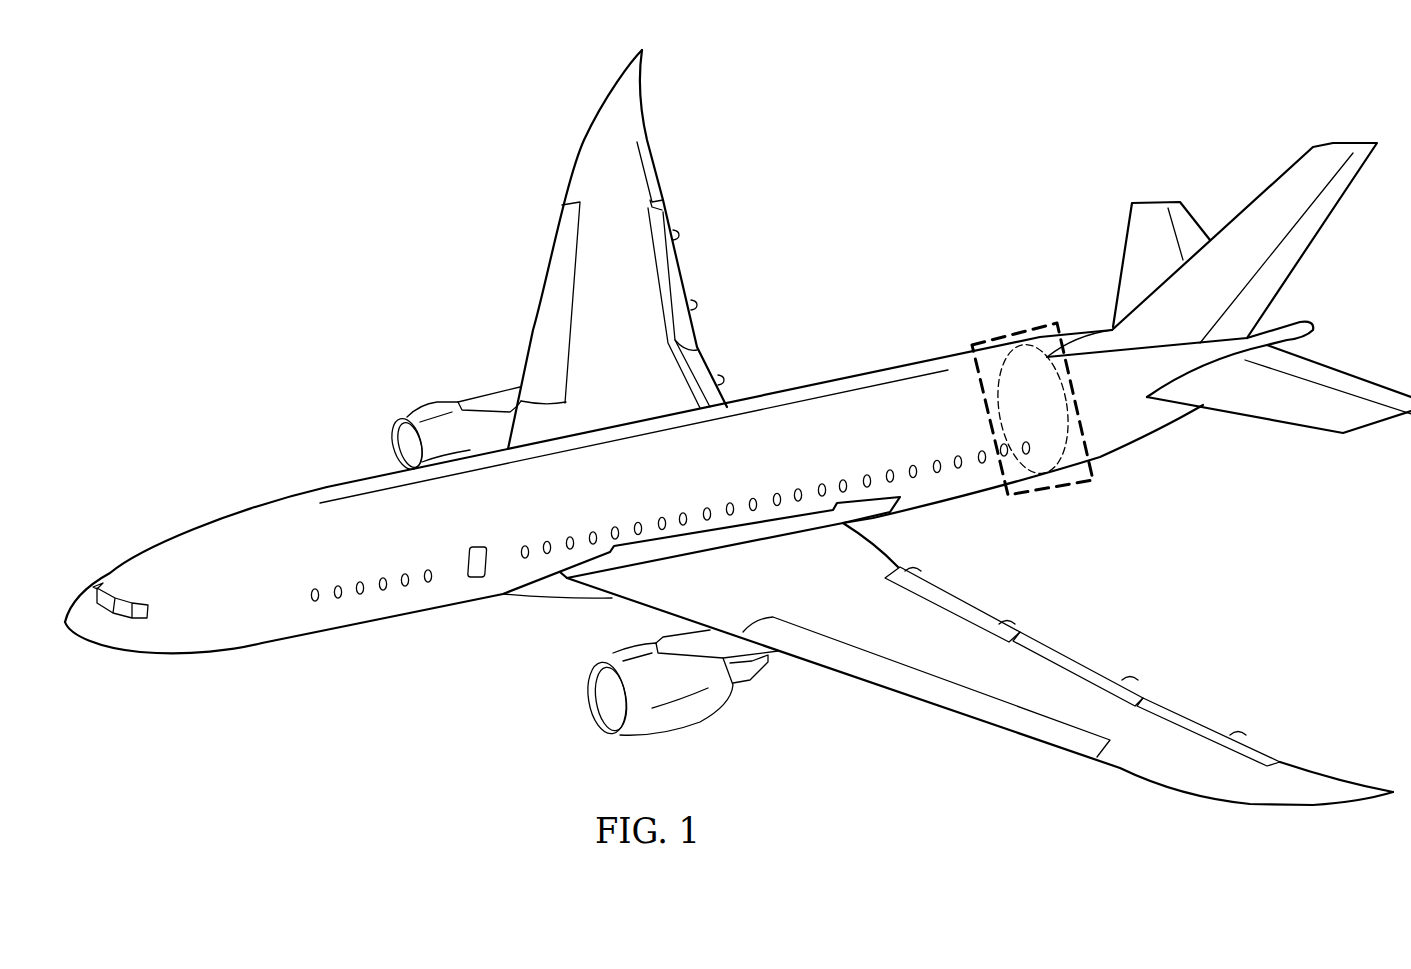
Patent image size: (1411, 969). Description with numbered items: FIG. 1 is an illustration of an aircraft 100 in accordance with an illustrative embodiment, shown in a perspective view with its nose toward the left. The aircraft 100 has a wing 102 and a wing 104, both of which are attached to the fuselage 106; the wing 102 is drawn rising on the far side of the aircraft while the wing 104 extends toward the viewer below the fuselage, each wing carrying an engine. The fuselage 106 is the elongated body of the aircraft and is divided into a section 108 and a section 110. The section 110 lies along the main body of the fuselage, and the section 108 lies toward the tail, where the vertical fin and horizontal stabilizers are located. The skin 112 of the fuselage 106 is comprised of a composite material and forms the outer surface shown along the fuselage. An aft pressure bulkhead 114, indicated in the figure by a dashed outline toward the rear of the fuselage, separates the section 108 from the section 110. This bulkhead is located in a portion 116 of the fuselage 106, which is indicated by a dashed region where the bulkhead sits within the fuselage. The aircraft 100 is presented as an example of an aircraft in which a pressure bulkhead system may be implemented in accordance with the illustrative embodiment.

The aircraft 100 is at (338, 210).
The wing 102 is at (641, 88).
The wing 104 is at (1238, 805).
The fuselage 106 is at (327, 487).
The section 108 is at (1132, 450).
The section 110 is at (941, 356).
The skin 112 is at (825, 379).
The aft pressure bulkhead 114 is at (1040, 347).
The portion 116 is at (981, 396).